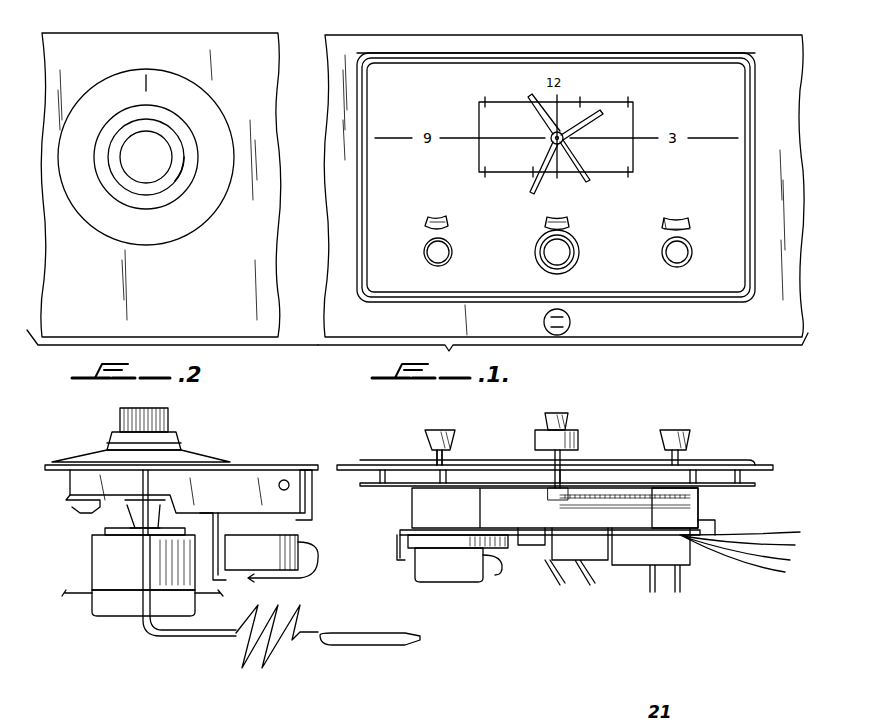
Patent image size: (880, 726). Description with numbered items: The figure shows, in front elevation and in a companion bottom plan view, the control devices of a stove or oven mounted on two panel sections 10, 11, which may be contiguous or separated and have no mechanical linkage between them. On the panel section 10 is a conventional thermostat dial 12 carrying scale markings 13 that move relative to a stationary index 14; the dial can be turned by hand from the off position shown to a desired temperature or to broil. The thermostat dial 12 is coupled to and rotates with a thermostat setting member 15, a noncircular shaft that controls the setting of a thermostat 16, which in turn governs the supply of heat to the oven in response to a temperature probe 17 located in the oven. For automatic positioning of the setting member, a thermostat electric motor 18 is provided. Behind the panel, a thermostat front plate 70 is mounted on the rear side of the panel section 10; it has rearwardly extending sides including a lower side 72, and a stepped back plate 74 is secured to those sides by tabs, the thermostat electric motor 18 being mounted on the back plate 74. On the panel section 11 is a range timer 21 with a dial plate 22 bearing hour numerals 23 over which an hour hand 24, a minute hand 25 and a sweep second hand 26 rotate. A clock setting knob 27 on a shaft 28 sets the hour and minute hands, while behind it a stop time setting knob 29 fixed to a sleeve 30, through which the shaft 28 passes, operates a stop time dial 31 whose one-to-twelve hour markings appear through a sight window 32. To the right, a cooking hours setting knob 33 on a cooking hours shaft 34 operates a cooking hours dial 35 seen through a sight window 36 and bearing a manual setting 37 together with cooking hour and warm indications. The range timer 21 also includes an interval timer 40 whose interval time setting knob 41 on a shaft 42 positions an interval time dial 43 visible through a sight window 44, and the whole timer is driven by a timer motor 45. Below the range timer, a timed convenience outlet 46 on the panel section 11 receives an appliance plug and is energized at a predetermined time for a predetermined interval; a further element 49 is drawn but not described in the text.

In FIG. 2, the panel section 10 is at (62, 43).
In FIG. 1, the panel section 11 is at (450, 40).
In FIG. 2, the thermostat dial 12 is at (118, 108).
In FIG. 2, the scale markings 13 is at (202, 141).
In FIG. 2, the stationary index 14 is at (150, 78).
In FIG. 2, the thermostat setting member 15 is at (125, 524).
In FIG. 2, the thermostat 16 is at (86, 622).
In FIG. 2, the temperature probe 17 is at (360, 646).
In FIG. 2, the thermostat electric motor 18 is at (310, 571).
In FIG. 1, the range timer 21 is at (609, 46).
In FIG. 1, the dial plate 22 is at (740, 174).
In FIG. 1, the hour numerals 23 is at (567, 83).
In FIG. 1, the hour hand 24 is at (603, 112).
In FIG. 1, the minute hand 25 is at (530, 186).
In FIG. 1, the sweep second hand 26 is at (578, 165).
In FIG. 1, the clock setting knob 27 is at (565, 260).
In FIG. 1, the shaft 28 is at (553, 462).
In FIG. 1, the stop time setting knob 29 is at (580, 250).
In FIG. 1, the sleeve 30 is at (580, 455).
In FIG. 1, the stop time dial 31 is at (569, 222).
In FIG. 1, the sight window 32 is at (545, 224).
In FIG. 1, the cooking hours setting knob 33 is at (684, 262).
In FIG. 1, the cooking hours shaft 34 is at (680, 457).
In FIG. 1, the cooking hours dial 35 is at (688, 230).
In FIG. 1, the sight window 36 is at (690, 222).
In FIG. 1, the manual setting 37 is at (651, 231).
In FIG. 1, the interval timer 40 is at (406, 181).
In FIG. 1, the interval time setting knob 41 is at (444, 259).
In FIG. 1, the shaft 42 is at (452, 453).
In FIG. 1, the interval time dial 43 is at (447, 228).
In FIG. 1, the sight window 44 is at (445, 220).
In FIG. 1, the timer motor 45 is at (495, 590).
In FIG. 1, the timed convenience outlet 46 is at (571, 325).
In FIG. 1, the switch housing 49 is at (700, 505).
In FIG. 2, the thermostat front plate 70 is at (300, 466).
In FIG. 2, the lower side 72 is at (232, 480).
In FIG. 2, the stepped back plate 74 is at (68, 504).